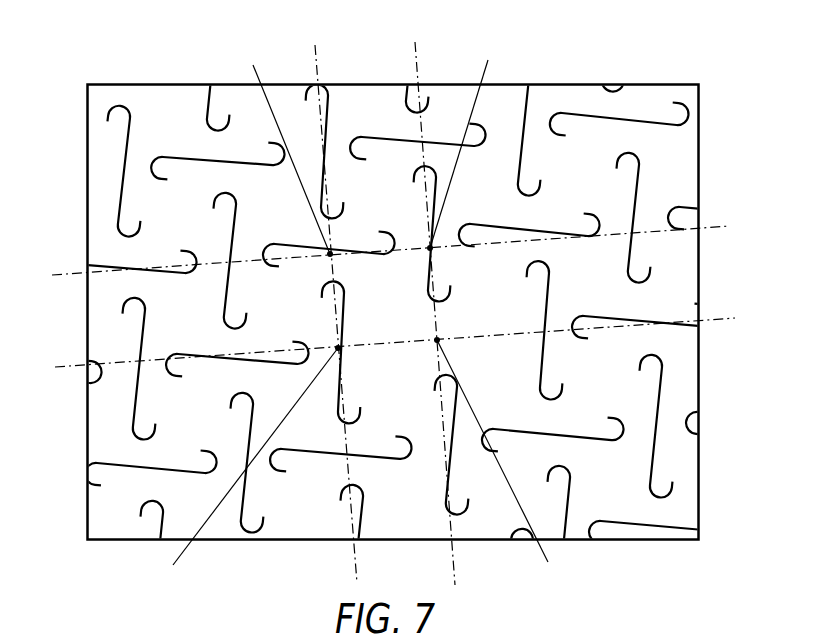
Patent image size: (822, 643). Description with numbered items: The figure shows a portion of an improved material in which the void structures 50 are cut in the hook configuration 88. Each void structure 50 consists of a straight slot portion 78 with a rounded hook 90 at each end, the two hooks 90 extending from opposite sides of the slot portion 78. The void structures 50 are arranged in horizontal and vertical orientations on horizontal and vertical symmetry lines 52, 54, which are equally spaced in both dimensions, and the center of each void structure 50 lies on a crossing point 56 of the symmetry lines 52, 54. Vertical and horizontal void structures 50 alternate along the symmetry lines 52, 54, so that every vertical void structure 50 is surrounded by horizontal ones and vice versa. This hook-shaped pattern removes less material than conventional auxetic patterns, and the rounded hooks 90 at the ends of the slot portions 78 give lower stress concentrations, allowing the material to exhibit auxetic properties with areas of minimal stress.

The void structure 50 is at (657, 412).
The horizontal symmetry line 52 is at (410, 291).
The vertical symmetry line 54 is at (379, 302).
The crossing point 56 is at (363, 312).
The slot portion 78 is at (183, 155).
The hook configuration 88 is at (128, 347).
The rounded hook 90 is at (117, 106).